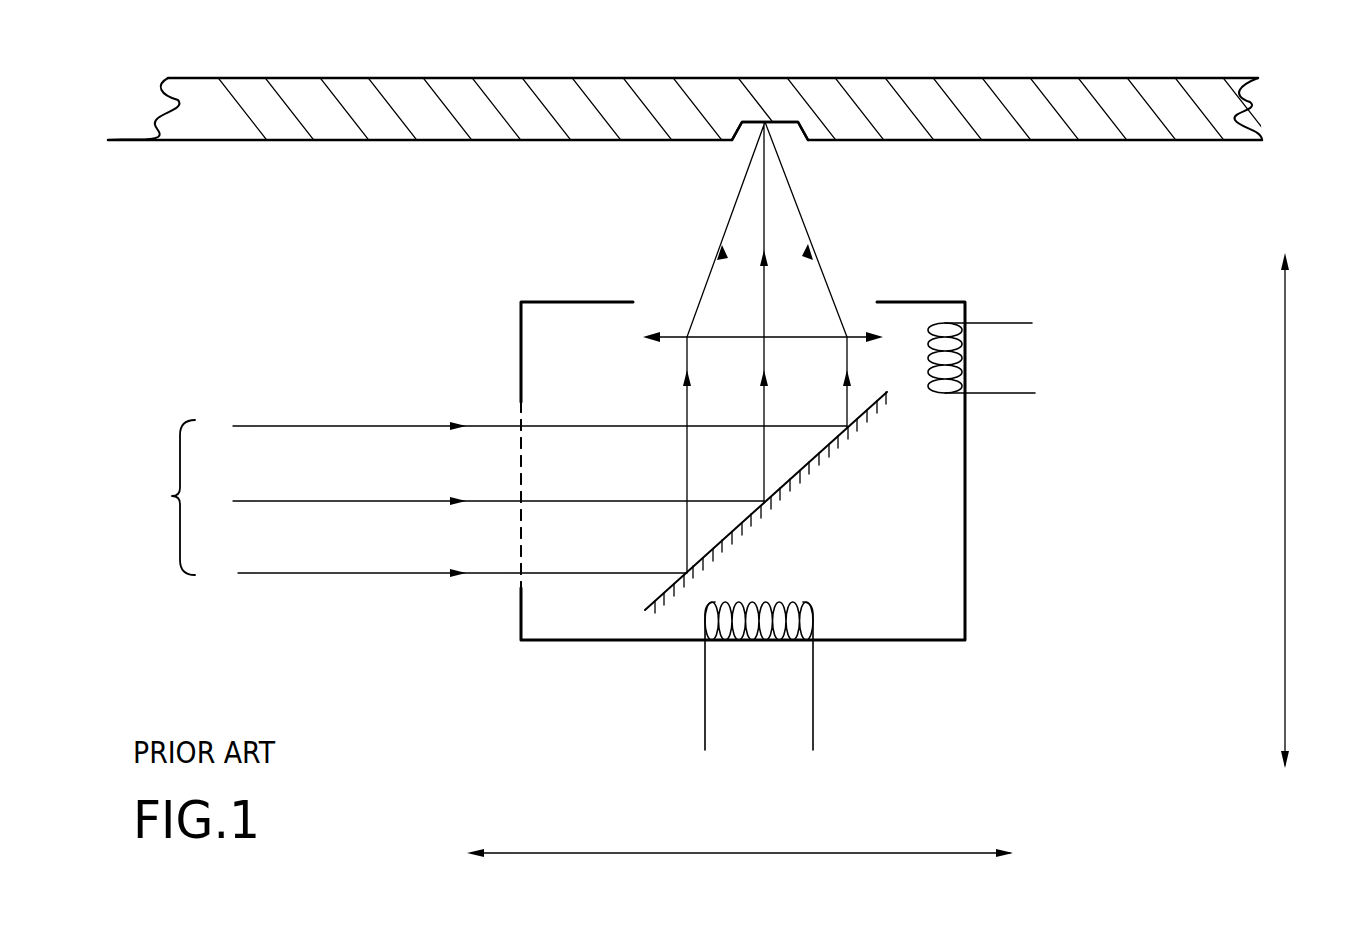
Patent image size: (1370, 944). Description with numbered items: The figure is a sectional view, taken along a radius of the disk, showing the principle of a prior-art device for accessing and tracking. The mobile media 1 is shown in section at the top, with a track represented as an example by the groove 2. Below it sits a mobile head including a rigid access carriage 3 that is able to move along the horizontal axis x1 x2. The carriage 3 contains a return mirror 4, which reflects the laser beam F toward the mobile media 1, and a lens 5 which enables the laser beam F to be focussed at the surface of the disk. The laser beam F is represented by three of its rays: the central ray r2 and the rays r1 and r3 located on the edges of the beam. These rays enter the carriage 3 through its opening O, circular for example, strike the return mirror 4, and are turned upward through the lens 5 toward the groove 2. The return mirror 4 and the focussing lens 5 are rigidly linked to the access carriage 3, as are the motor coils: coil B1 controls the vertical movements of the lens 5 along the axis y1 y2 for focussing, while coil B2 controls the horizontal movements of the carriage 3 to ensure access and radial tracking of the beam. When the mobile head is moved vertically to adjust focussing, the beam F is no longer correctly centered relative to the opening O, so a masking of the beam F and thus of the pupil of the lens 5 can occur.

The mobile media 1 is at (243, 108).
The groove 2 is at (787, 133).
The access carriage 3 is at (965, 580).
The return mirror 4 is at (828, 443).
The lens 5 is at (725, 335).
The opening O is at (518, 478).
The ray r1 is at (303, 426).
The central ray r2 is at (330, 501).
The ray r3 is at (307, 573).
The laser beam F is at (153, 497).
The motor coil B1 is at (1002, 395).
The motor coil B2 is at (813, 695).
The horizontal axis end x1 is at (725, 869).
The horizontal axis end x2 is at (1000, 871).
The vertical axis end y1 is at (1312, 766).
The vertical axis end y2 is at (1312, 501).